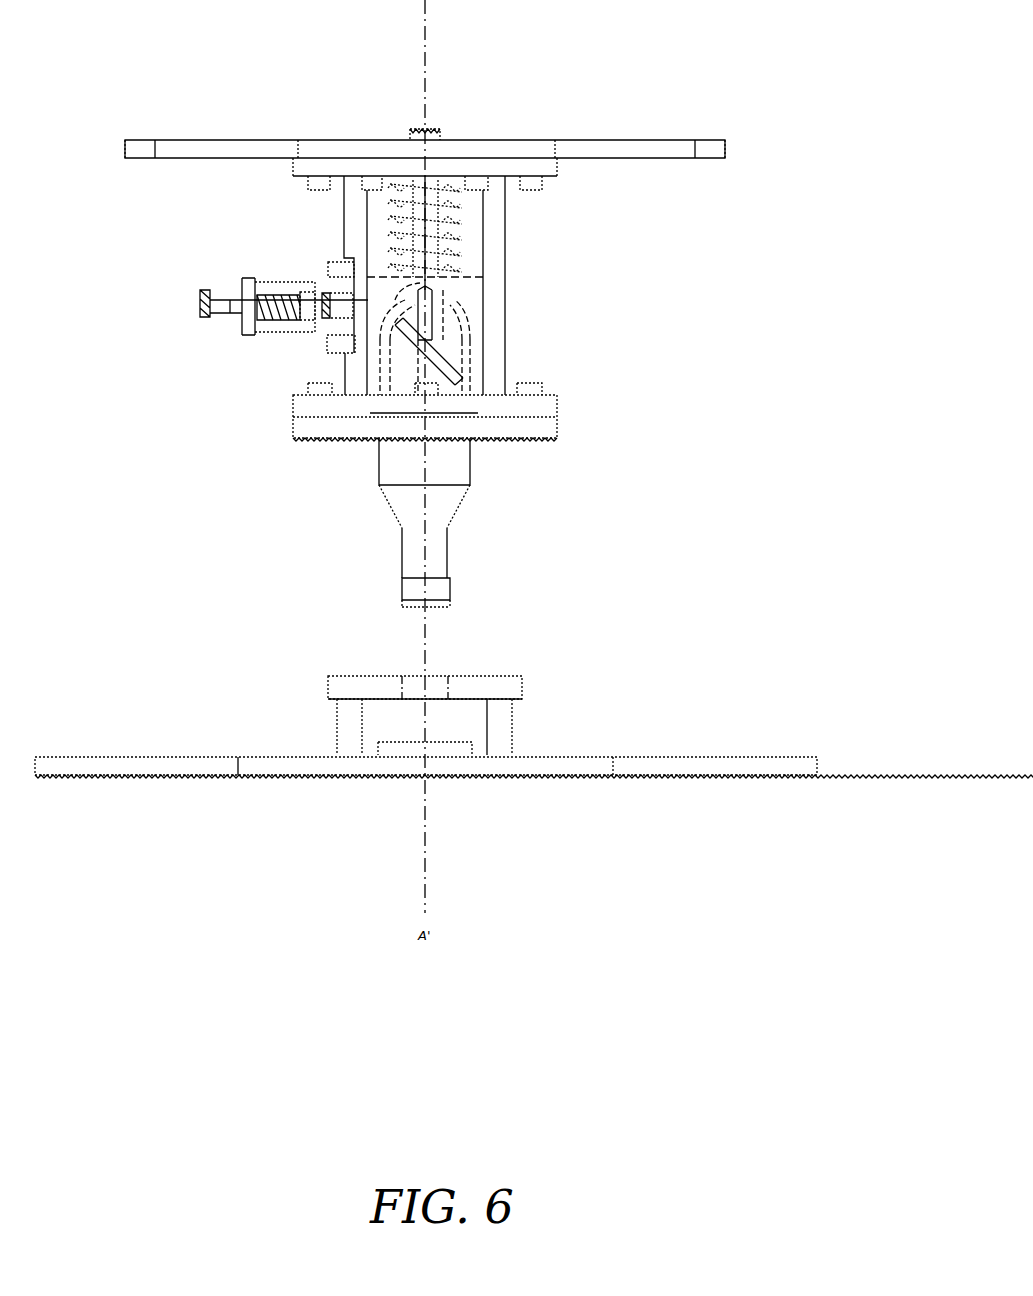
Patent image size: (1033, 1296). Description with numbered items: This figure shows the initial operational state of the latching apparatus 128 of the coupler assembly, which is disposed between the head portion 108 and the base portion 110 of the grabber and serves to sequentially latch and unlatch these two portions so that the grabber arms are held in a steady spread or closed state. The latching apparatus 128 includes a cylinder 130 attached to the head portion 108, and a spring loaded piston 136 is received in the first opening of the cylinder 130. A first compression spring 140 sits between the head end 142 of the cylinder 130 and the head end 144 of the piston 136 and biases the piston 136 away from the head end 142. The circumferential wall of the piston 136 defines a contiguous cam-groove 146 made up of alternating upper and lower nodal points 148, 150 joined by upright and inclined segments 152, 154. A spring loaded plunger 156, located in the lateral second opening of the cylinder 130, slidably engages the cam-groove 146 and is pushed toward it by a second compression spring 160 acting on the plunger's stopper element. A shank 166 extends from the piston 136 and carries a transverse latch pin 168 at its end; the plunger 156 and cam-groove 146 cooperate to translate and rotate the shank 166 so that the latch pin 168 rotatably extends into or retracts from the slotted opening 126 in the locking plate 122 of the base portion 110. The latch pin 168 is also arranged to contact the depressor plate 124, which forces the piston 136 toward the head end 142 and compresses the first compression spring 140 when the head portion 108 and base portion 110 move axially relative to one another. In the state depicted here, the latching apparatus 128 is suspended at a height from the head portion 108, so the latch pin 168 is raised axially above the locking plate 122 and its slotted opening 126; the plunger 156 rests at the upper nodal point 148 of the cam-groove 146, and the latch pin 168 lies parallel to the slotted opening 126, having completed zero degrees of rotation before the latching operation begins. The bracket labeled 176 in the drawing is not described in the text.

The head portion 108 is at (197, 138).
The base portion 110 is at (165, 755).
The locking plate 122 is at (490, 688).
The depressor plate 124 is at (460, 740).
The slotted opening 126 is at (412, 683).
The latching apparatus 128 is at (742, 70).
The cylinder 130 is at (507, 360).
The spring loaded piston 136 is at (483, 278).
The first compression spring 140 is at (483, 222).
The head end of the cylinder 142 is at (512, 188).
The head end of the piston 144 is at (468, 285).
The cam-groove 146 is at (482, 347).
The upper nodal point 148 is at (378, 277).
The lower nodal point 150 is at (365, 395).
The upright segment 152 is at (440, 300).
The inclined segment 154 is at (413, 392).
The spring loaded plunger 156 is at (217, 323).
The second compression spring 160 is at (283, 288).
The shank 166 is at (435, 545).
The latch pin 168 is at (437, 588).
The bracket 176 is at (325, 290).